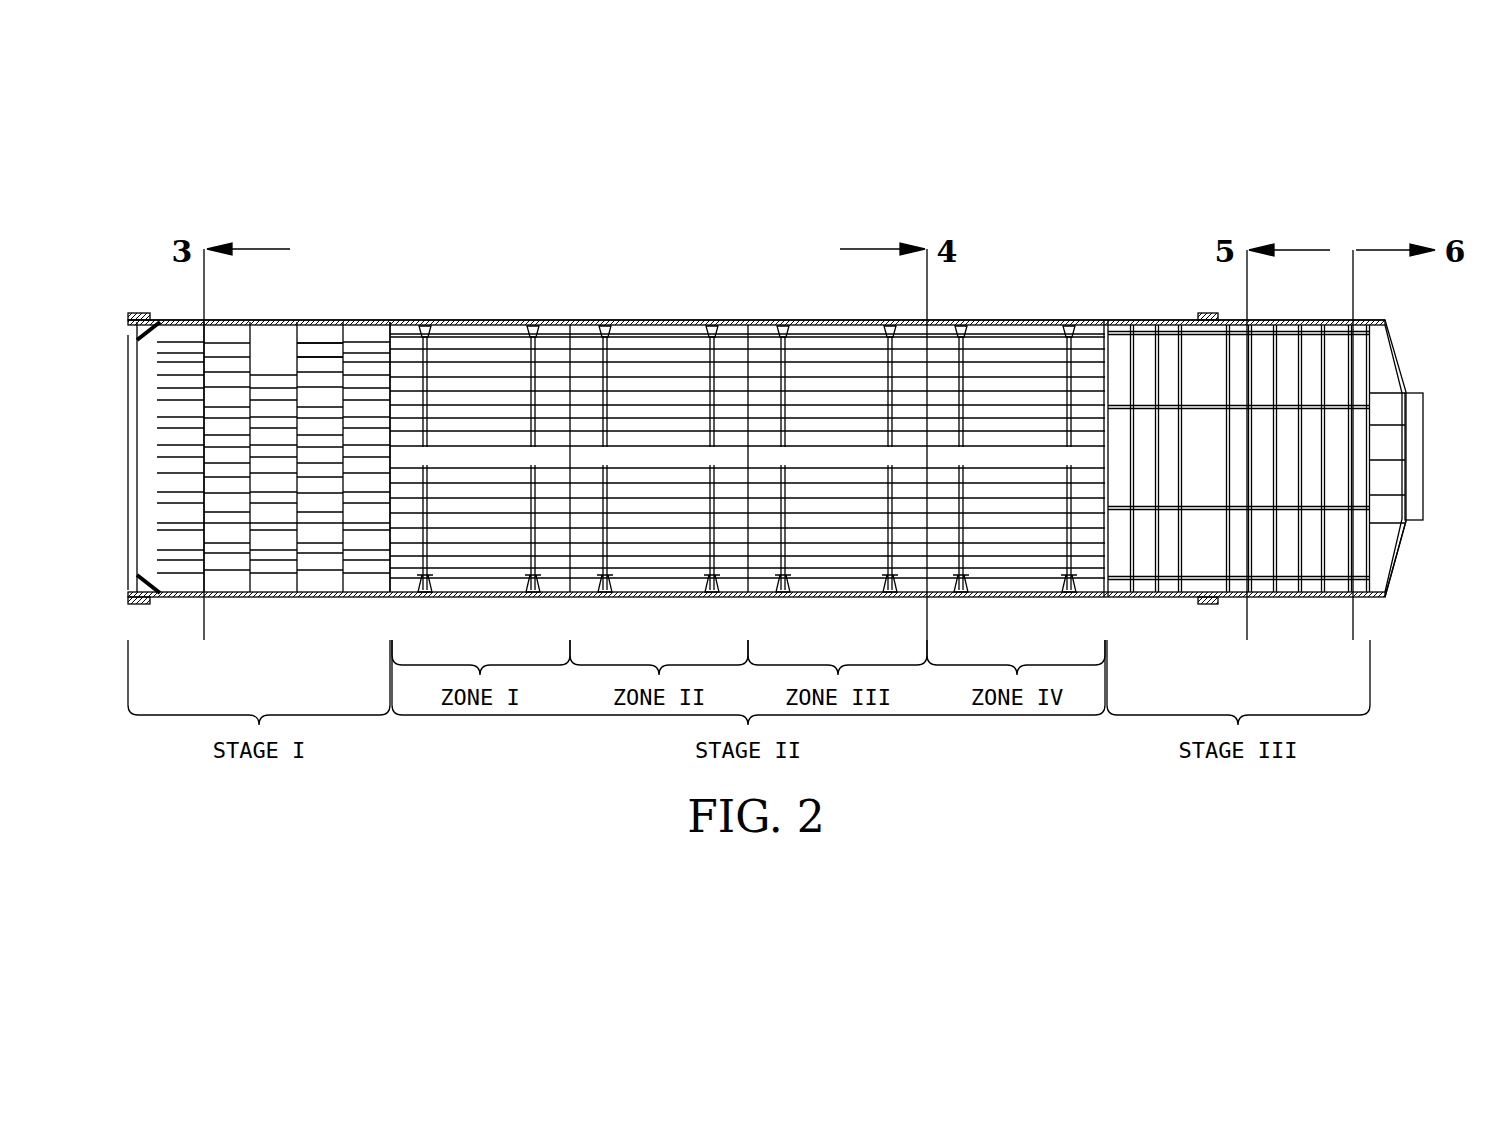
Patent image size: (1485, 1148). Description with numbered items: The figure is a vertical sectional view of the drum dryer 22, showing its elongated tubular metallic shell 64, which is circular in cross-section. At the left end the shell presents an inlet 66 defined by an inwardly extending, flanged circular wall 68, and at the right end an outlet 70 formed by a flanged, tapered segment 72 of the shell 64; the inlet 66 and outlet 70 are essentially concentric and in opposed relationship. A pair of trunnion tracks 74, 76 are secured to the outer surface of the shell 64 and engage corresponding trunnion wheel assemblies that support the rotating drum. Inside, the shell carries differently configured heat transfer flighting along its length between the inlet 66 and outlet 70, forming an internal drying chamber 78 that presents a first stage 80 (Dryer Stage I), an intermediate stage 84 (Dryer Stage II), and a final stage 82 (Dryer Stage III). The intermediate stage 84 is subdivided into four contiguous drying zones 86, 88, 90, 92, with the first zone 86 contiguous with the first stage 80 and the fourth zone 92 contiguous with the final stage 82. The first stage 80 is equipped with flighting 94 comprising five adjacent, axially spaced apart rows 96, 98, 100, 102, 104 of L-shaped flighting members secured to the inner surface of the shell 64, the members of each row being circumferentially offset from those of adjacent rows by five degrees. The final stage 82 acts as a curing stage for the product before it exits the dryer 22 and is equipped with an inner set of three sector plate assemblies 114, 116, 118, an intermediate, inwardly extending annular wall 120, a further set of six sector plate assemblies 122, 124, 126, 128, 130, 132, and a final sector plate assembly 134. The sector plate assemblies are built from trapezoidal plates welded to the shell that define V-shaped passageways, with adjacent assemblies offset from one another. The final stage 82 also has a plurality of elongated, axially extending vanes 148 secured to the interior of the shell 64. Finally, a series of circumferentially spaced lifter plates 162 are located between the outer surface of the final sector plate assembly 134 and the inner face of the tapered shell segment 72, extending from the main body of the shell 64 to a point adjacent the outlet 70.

The drum dryer 22 is at (1052, 232).
The tubular metallic shell 64 is at (697, 330).
The inlet 66 is at (126, 545).
The flanged circular wall 68 is at (128, 340).
The outlet 70 is at (1422, 490).
The tapered segment 72 is at (1393, 372).
The trunnion track 74 is at (138, 600).
The trunnion track 76 is at (1217, 598).
The internal drying chamber 78 is at (830, 445).
The first stage 80 is at (372, 330).
The final stage 82 is at (1310, 355).
The intermediate stage 84 is at (808, 358).
The first drying zone 86 is at (470, 598).
The second drying zone 88 is at (650, 598).
The third drying zone 90 is at (830, 598).
The fourth drying zone 92 is at (1007, 598).
The flighting 94 is at (322, 342).
The flighting row 96 is at (178, 590).
The flighting row 98 is at (222, 588).
The flighting row 100 is at (262, 588).
The flighting row 102 is at (308, 588).
The flighting row 104 is at (355, 588).
The sector plate assembly 114 is at (1135, 355).
The sector plate assembly 116 is at (1158, 368).
The sector plate assembly 118 is at (1178, 560).
The annular wall 120 is at (1210, 572).
The sector plate assembly 122 is at (1228, 348).
The sector plate assembly 124 is at (1250, 382).
The sector plate assembly 126 is at (1278, 345).
The sector plate assembly 128 is at (1300, 563).
The sector plate assembly 130 is at (1372, 382).
The sector plate assembly 132 is at (1367, 593).
The final sector plate assembly 134 is at (1372, 352).
The vanes 148 is at (1207, 503).
The lifter plates 162 is at (1390, 555).